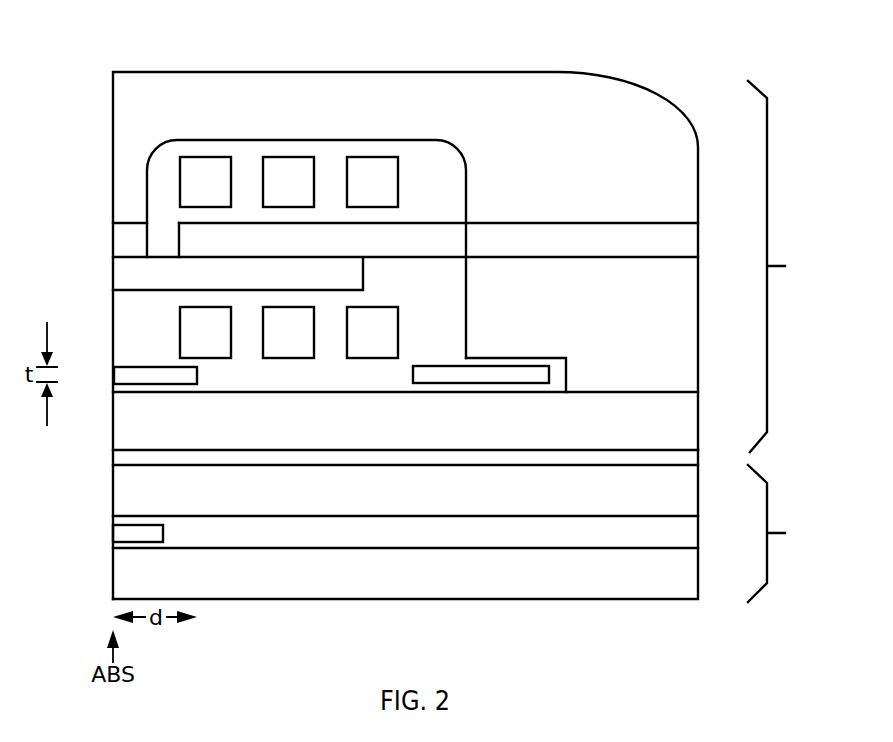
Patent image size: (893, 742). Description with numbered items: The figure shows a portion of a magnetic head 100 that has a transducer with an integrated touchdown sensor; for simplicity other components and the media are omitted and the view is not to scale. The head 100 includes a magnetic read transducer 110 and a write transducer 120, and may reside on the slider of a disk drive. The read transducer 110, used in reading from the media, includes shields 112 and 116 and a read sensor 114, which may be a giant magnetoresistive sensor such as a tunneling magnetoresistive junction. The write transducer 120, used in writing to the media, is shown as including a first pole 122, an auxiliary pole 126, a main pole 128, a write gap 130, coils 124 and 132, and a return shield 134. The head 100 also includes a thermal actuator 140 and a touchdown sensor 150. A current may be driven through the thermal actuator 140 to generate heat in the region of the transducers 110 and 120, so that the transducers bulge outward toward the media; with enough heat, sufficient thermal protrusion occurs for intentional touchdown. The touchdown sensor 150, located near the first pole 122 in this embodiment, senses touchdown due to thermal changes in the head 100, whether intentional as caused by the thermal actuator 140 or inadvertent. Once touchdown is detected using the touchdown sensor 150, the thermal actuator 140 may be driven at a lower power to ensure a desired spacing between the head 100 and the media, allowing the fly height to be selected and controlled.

The magnetic head 100 is at (437, 27).
The magnetic read transducer 110 is at (782, 533).
The shield 112 is at (700, 599).
The read sensor 114 is at (113, 530).
The shield 116 is at (113, 480).
The write transducer 120 is at (782, 266).
The first pole 122 is at (113, 415).
The coil 124 is at (430, 322).
The auxiliary pole 126 is at (637, 223).
The main pole 128 is at (113, 273).
The write gap 130 is at (128, 223).
The coil 132 is at (430, 188).
The return shield 134 is at (113, 158).
The thermal actuator 140 is at (550, 378).
The touchdown sensor 150 is at (113, 372).